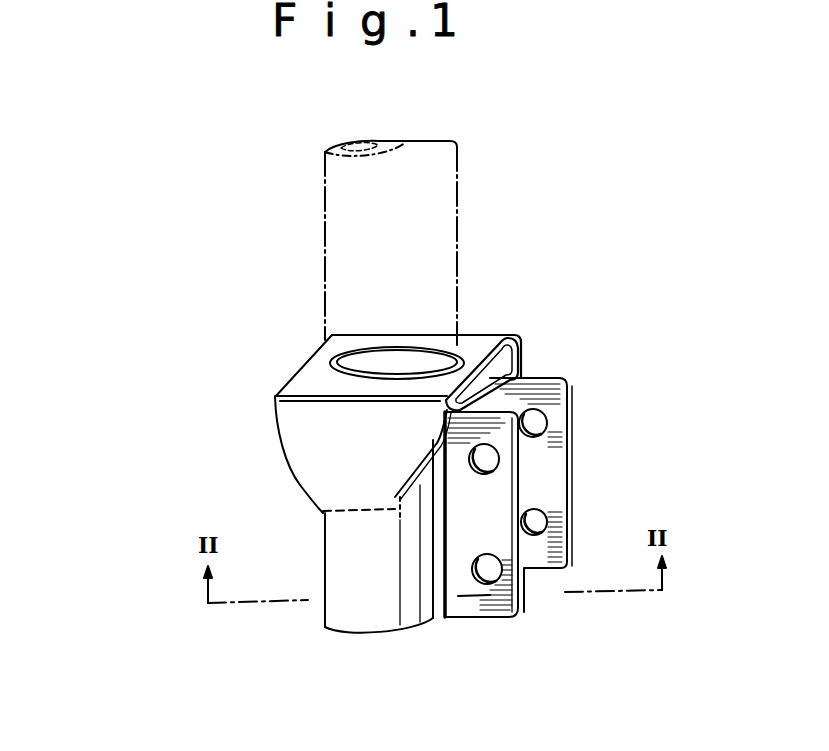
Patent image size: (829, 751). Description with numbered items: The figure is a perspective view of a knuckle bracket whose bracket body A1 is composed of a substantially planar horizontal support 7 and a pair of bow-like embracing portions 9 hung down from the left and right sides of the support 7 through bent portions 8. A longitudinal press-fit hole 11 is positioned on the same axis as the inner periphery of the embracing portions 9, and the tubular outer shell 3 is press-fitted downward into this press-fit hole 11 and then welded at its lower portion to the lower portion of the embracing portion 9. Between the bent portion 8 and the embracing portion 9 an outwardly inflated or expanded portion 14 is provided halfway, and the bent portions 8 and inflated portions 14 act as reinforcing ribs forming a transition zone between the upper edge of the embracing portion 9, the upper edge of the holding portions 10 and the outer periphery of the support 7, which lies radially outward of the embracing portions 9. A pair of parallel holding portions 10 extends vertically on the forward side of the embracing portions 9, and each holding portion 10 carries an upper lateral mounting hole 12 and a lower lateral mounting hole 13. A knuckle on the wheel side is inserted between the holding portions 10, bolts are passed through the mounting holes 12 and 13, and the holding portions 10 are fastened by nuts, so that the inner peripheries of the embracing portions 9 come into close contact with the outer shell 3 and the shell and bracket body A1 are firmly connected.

The outer shell 3 is at (457, 238).
The horizontal support 7 is at (483, 335).
The bent portion 8 is at (528, 352).
The embracing portion 9 is at (385, 612).
The holding portion 10 is at (572, 480).
The longitudinal press-fit hole 11 is at (350, 375).
The upper lateral mounting hole 12 is at (547, 420).
The lower lateral mounting hole 13 is at (572, 523).
The inflated portion 14 is at (309, 462).
The bracket body A1 is at (331, 633).